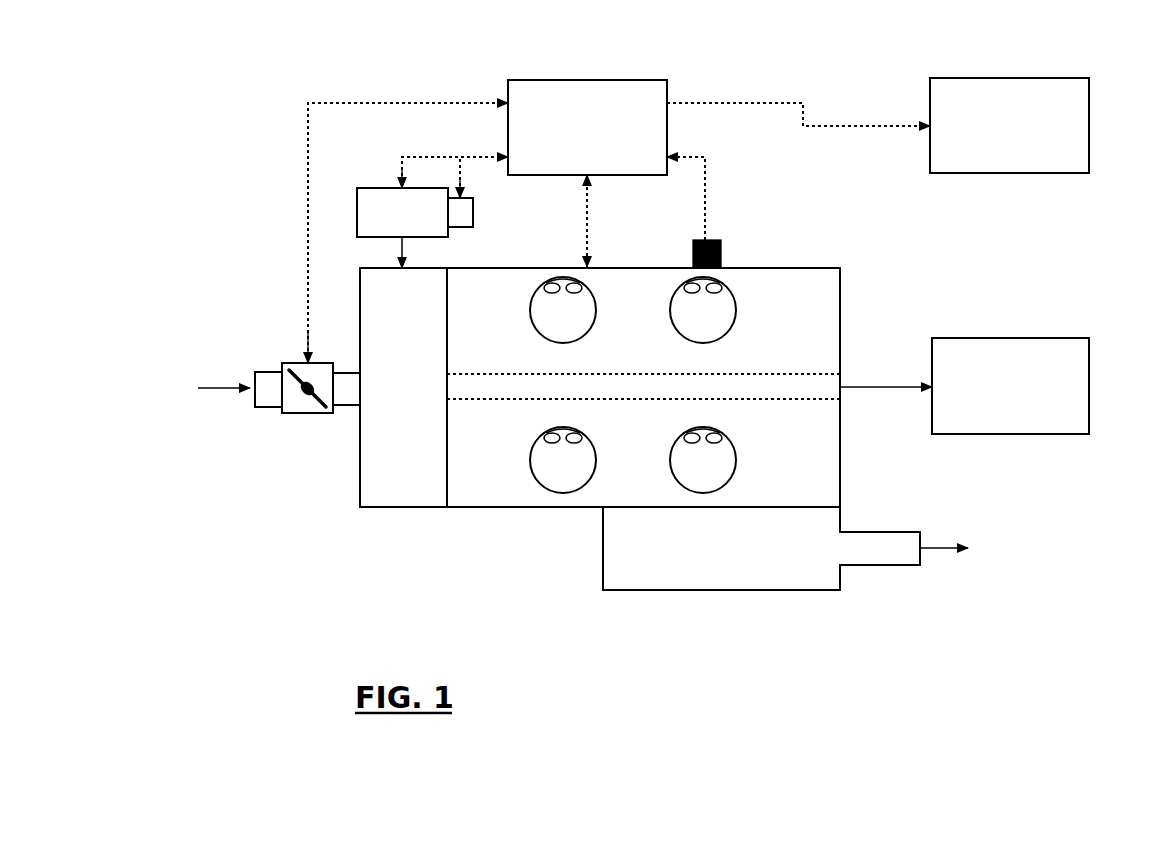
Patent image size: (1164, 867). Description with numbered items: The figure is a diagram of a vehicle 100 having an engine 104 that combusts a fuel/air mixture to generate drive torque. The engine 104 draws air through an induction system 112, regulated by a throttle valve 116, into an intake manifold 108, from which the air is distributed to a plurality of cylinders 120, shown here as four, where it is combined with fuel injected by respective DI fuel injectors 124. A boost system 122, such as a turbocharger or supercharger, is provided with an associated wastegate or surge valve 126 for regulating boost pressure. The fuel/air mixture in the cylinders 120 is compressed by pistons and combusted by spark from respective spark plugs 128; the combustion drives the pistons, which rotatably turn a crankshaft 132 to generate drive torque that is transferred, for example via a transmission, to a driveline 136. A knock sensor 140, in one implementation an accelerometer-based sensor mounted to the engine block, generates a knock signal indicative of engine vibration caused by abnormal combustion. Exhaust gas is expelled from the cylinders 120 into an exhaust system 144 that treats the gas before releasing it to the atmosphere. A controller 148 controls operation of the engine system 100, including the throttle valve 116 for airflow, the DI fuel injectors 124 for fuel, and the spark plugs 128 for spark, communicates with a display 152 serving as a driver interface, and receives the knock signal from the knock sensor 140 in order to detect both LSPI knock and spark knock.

The vehicle 100 is at (243, 599).
The engine 104 is at (568, 507).
The intake manifold 108 is at (400, 507).
The induction system 112 is at (265, 372).
The throttle valve 116 is at (290, 413).
The cylinders 120 is at (533, 470).
The boost system 122 is at (368, 188).
The DI fuel injectors 124 is at (557, 429).
The wastegate or surge valve 126 is at (473, 215).
The spark plugs 128 is at (727, 438).
The crankshaft 132 is at (643, 386).
The driveline 136 is at (1063, 338).
The knock sensor 140 is at (721, 250).
The exhaust system 144 is at (723, 590).
The controller 148 is at (588, 80).
The display 152 is at (1012, 78).